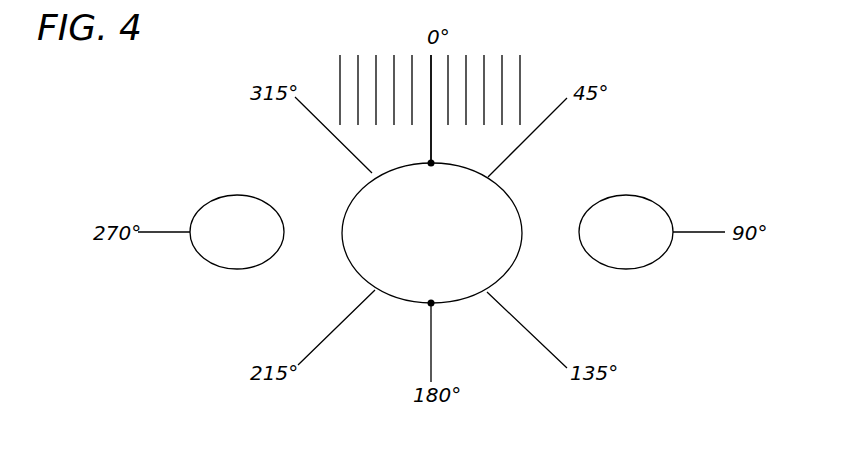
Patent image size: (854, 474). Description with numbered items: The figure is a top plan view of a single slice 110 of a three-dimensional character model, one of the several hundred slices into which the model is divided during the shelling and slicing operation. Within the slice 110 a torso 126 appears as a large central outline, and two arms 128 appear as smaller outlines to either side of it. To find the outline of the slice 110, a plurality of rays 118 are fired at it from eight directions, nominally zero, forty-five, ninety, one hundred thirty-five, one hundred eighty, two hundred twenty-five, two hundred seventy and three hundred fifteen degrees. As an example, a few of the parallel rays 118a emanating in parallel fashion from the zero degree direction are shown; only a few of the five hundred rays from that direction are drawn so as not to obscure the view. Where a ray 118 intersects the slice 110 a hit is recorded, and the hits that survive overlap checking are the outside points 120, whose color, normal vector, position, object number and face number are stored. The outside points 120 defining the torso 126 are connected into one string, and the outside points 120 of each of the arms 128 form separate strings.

The slice 110 is at (236, 130).
The rays 118 is at (337, 326).
The parallel rays 118a is at (328, 62).
The outside points 120 is at (434, 162).
The torso 126 is at (449, 246).
The arms 128 is at (256, 245).